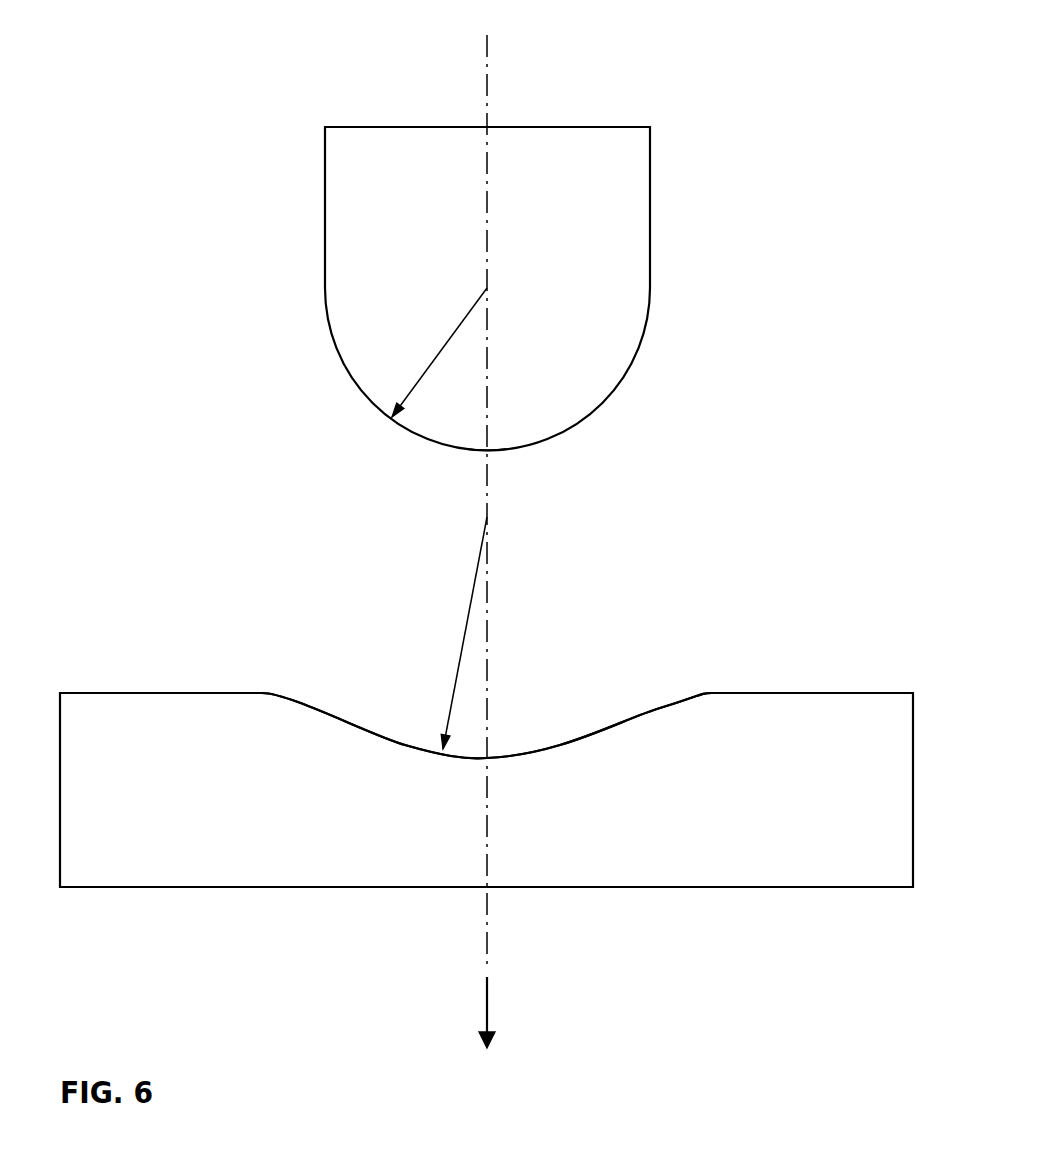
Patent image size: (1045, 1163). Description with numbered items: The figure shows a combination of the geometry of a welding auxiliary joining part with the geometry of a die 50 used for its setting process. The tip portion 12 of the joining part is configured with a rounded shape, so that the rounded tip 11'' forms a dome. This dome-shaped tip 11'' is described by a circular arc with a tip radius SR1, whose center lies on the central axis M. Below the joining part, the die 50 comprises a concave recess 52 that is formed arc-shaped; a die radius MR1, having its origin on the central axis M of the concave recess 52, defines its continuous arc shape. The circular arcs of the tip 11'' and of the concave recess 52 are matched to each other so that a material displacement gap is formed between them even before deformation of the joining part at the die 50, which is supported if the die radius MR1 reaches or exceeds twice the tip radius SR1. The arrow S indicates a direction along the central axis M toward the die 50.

The tip portion 12 is at (650, 385).
The rounded tip 11'' is at (523, 490).
The die 50 is at (806, 801).
The concave recess 52 is at (403, 743).
The central axis M is at (487, 62).
The scanning direction S is at (487, 1013).
The tip radius SR1 is at (433, 358).
The die radius MR1 is at (458, 668).